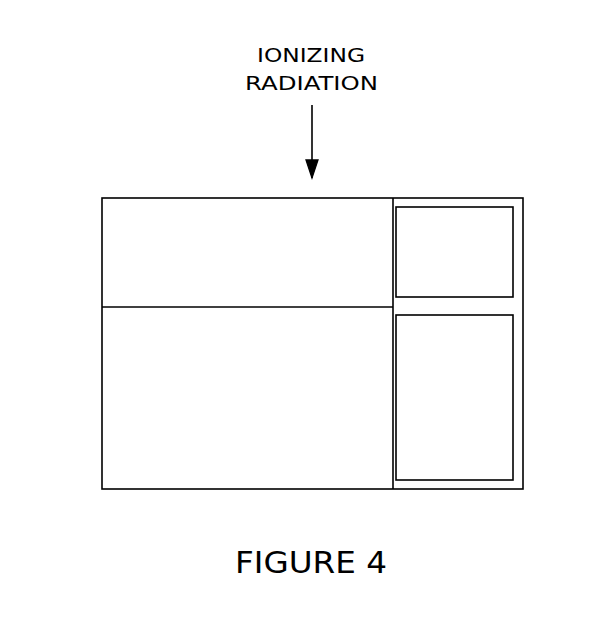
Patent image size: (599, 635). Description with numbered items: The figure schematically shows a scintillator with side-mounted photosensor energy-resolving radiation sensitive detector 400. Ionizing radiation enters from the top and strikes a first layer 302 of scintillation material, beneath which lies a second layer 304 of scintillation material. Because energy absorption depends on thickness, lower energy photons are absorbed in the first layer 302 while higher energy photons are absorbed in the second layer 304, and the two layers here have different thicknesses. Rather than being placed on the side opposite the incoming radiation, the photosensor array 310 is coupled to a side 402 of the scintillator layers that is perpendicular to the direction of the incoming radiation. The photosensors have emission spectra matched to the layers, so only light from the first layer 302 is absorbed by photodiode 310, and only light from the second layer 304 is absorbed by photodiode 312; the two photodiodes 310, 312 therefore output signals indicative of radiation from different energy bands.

The detector 400 is at (128, 160).
The first layer 302 is at (102, 252).
The second layer 304 is at (102, 398).
The photosensor array 310 is at (513, 198).
The photodiode 312 is at (513, 395).
The side 402 is at (396, 198).